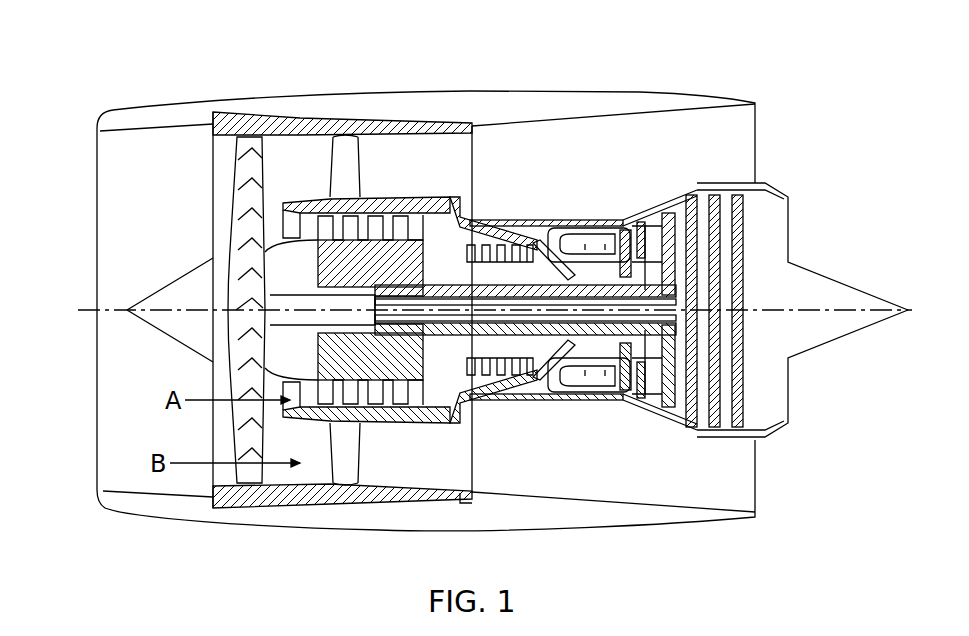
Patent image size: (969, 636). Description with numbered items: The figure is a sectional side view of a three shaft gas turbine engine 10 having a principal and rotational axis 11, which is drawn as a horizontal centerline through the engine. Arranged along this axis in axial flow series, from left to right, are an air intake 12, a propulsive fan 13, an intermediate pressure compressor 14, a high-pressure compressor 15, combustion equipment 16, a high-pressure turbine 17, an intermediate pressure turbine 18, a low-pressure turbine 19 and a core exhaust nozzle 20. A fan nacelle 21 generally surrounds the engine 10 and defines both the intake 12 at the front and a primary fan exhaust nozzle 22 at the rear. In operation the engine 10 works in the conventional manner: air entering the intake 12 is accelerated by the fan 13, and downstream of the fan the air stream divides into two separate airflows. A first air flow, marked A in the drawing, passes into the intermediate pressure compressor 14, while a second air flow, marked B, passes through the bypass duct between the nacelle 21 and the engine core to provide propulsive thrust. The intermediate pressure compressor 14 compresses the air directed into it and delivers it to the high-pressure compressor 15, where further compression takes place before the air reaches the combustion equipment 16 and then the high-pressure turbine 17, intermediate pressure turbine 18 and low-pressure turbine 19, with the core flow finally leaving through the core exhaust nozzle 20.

The gas turbine engine 10 is at (72, 185).
The principal and rotational axis 11 is at (88, 310).
The air intake 12 is at (163, 127).
The propulsive fan 13 is at (253, 183).
The intermediate pressure compressor 14 is at (380, 423).
The high-pressure compressor 15 is at (502, 407).
The combustion equipment 16 is at (577, 400).
The high-pressure turbine 17 is at (627, 407).
The intermediate pressure turbine 18 is at (667, 417).
The low-pressure turbine 19 is at (720, 432).
The core exhaust nozzle 20 is at (795, 383).
The fan nacelle 21 is at (472, 91).
The primary fan exhaust nozzle 22 is at (757, 480).